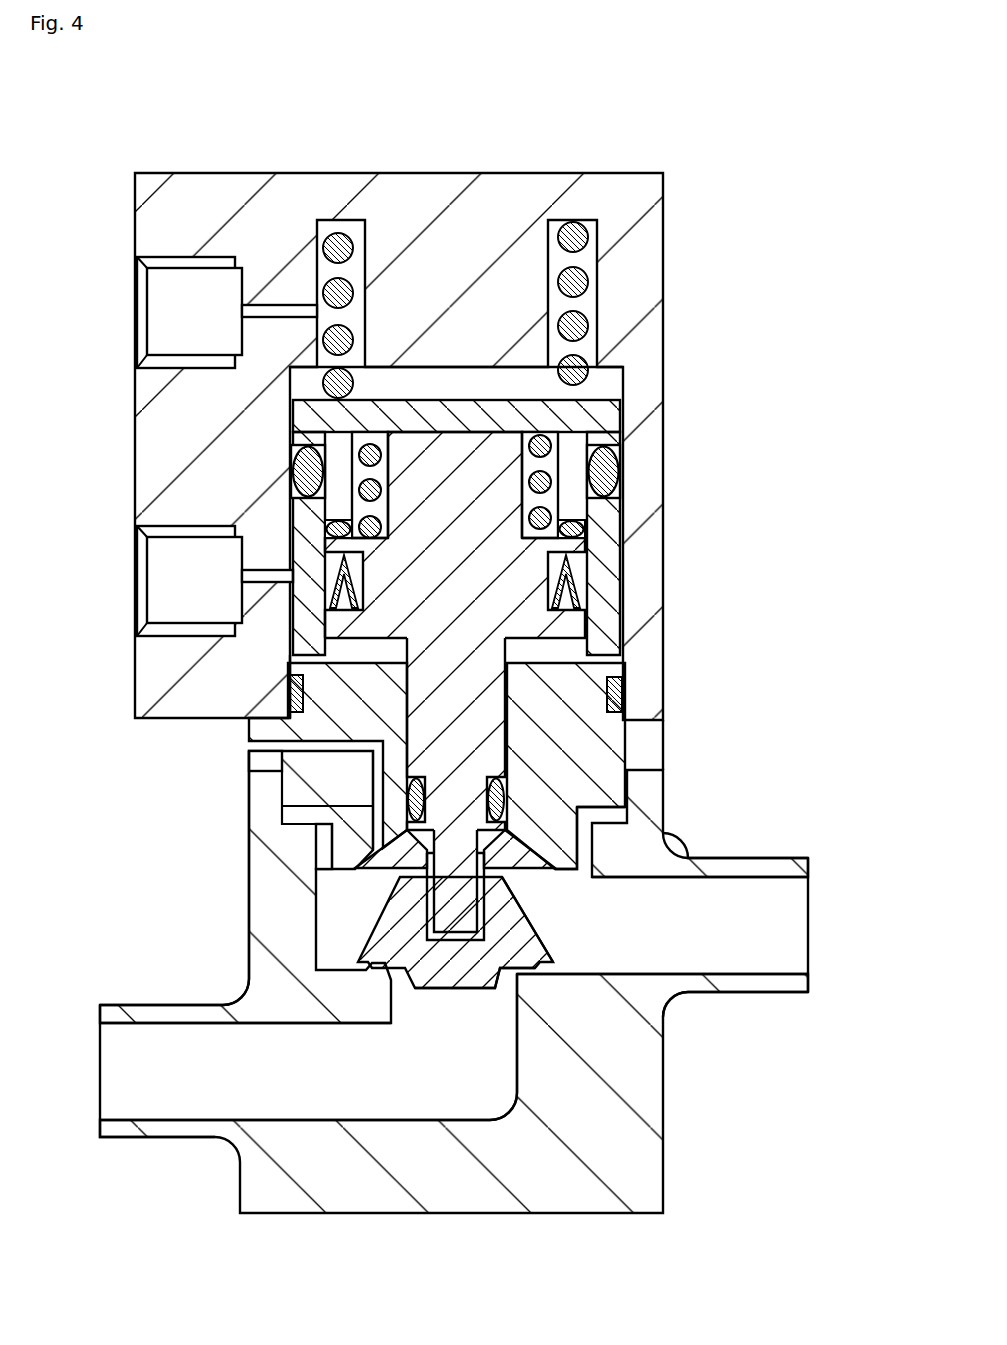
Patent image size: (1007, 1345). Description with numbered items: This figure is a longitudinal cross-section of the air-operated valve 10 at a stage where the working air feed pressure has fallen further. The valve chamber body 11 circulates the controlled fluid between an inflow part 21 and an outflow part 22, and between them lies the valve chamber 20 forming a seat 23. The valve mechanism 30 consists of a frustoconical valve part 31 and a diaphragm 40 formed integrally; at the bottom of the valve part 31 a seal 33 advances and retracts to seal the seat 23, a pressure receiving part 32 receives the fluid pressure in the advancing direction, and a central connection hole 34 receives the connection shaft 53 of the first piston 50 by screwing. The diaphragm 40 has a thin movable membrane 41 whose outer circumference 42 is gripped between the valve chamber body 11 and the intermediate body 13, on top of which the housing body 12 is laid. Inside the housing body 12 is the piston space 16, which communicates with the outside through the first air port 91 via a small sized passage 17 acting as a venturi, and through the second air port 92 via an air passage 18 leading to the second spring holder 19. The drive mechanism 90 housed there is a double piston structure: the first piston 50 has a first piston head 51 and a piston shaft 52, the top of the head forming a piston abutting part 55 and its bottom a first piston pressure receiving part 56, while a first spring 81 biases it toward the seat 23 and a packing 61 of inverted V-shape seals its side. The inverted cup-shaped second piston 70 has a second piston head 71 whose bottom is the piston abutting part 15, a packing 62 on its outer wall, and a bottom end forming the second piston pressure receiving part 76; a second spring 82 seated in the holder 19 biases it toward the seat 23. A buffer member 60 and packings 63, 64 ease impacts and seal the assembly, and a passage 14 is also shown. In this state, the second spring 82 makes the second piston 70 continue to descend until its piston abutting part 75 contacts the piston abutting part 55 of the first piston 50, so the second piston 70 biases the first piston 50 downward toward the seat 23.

The air-operated valve 10 is at (445, 646).
The valve chamber body 11 is at (458, 986).
The housing body 12 is at (409, 450).
The intermediate body 13 is at (640, 746).
The passage 14 is at (265, 748).
The piston abutting part 15 is at (375, 858).
The piston space 16 is at (285, 700).
The small sized passage 17 is at (285, 578).
The air passage 18 is at (278, 318).
The second spring holder 19 is at (340, 236).
The valve chamber 20 is at (466, 1076).
The inflow part 21 is at (140, 1140).
The outflow part 22 is at (790, 858).
The seat 23 is at (248, 984).
The valve mechanism 30 is at (459, 1073).
The valve part 31 is at (440, 965).
The pressure receiving part 32 is at (520, 905).
The seal 33 is at (480, 992).
The connection hole 34 is at (430, 903).
The diaphragm 40 is at (640, 807).
The movable membrane 41 is at (333, 878).
The outer circumference 42 is at (632, 808).
The first piston 50 is at (615, 472).
The first piston head 51 is at (575, 626).
The piston shaft 52 is at (612, 692).
The connection shaft 53 is at (470, 880).
The piston abutting part 55 is at (555, 406).
The first piston pressure receiving part 56 is at (620, 664).
The buffer member 60 is at (586, 524).
The packing 61 is at (580, 582).
The packing 62 is at (300, 472).
The packing 63 is at (290, 690).
The packing 64 is at (500, 790).
The second piston 70 is at (407, 510).
The second piston head 71 is at (452, 400).
The piston abutting part 75 is at (417, 432).
The second piston pressure receiving part 76 is at (355, 652).
The first spring 81 is at (526, 468).
The second spring 82 is at (575, 330).
The drive mechanism 90 is at (492, 398).
The first air port 91 is at (160, 590).
The second air port 92 is at (160, 292).